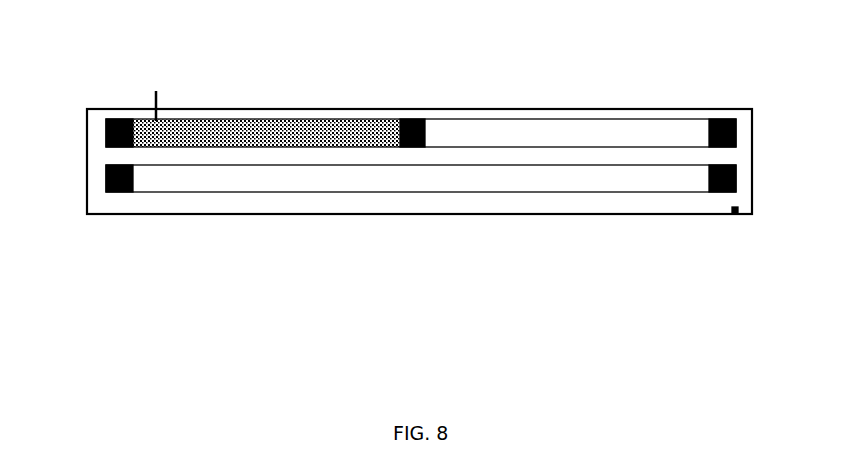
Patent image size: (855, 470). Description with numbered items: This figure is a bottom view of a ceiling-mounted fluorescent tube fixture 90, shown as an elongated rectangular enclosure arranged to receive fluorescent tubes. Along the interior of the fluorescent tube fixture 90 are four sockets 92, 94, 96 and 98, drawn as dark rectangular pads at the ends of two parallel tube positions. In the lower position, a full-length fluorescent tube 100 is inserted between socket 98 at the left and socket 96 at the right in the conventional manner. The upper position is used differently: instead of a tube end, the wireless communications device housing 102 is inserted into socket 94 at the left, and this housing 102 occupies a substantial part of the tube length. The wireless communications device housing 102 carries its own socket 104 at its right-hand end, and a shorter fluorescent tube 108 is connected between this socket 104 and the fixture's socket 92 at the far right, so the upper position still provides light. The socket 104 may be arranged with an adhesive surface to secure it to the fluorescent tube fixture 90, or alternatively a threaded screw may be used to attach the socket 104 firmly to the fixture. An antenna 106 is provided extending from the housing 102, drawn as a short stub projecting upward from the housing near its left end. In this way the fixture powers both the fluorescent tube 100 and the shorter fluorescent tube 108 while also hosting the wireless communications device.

The fluorescent tube fixture 90 is at (737, 213).
The socket 92 is at (737, 120).
The socket 94 is at (106, 120).
The socket 96 is at (737, 192).
The socket 98 is at (105, 166).
The fluorescent tube 100 is at (424, 193).
The wireless communications device housing 102 is at (272, 123).
The socket 104 is at (422, 120).
The antenna 106 is at (158, 91).
The fluorescent tube 108 is at (558, 120).